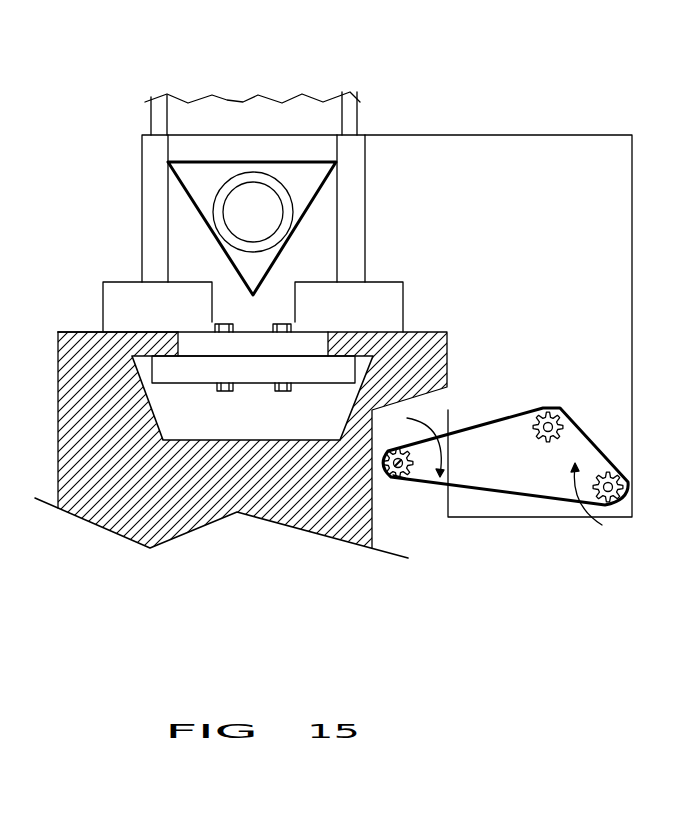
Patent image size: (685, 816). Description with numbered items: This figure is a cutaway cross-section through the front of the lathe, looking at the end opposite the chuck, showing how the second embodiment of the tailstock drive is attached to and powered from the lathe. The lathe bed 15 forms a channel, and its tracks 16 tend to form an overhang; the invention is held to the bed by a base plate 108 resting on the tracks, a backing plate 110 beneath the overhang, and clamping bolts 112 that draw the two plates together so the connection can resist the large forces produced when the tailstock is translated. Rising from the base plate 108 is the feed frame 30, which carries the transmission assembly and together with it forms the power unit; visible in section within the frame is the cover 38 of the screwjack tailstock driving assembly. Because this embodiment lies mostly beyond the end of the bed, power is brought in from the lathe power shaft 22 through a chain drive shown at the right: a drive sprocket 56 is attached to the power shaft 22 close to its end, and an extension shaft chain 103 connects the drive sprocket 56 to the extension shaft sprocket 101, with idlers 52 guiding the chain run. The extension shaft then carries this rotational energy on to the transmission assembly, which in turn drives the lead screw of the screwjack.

The bed 15 is at (157, 494).
The tracks 16 is at (155, 340).
The power shaft 22 is at (393, 472).
The feed frame 30 is at (353, 217).
The cover 38 is at (287, 200).
The idlers 52 is at (616, 477).
The drive sprocket 56 is at (393, 478).
The extension shaft sprocket 101 is at (557, 408).
The extension shaft chain 103 is at (598, 447).
The base plate 108 is at (315, 345).
The backing plate 110 is at (262, 370).
The clamping bolts 112 is at (223, 322).